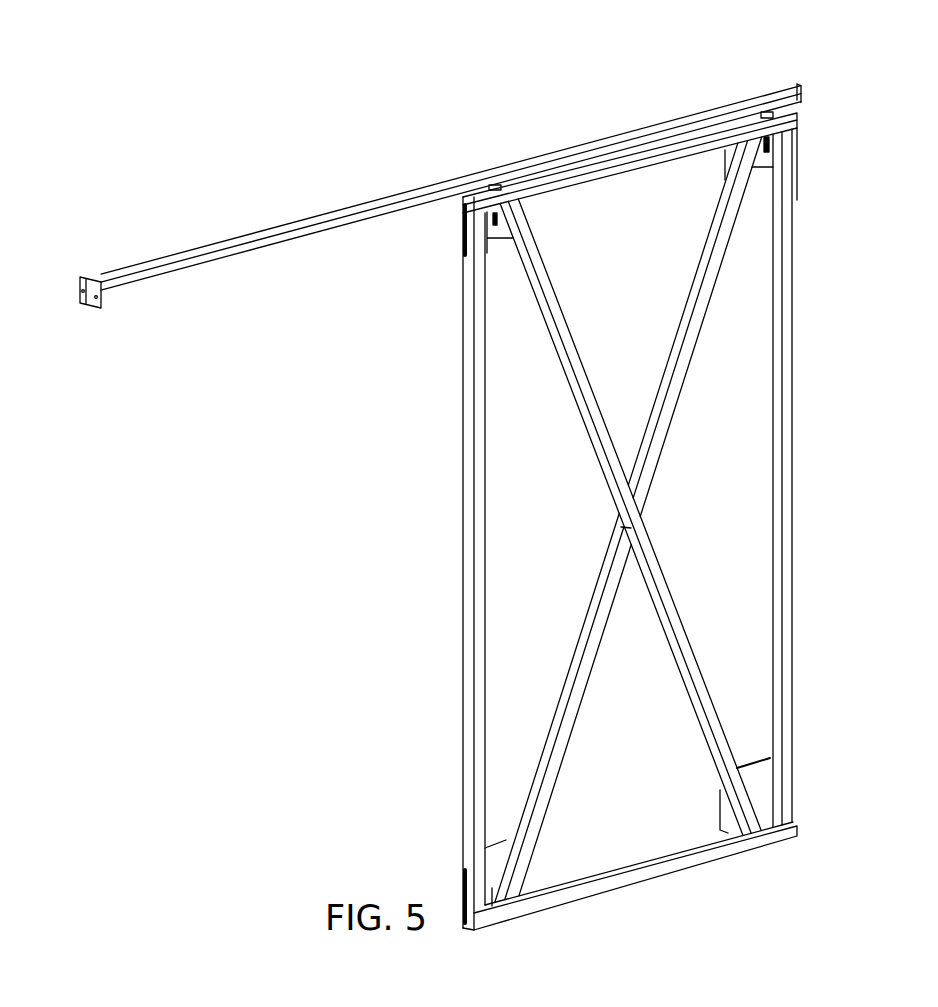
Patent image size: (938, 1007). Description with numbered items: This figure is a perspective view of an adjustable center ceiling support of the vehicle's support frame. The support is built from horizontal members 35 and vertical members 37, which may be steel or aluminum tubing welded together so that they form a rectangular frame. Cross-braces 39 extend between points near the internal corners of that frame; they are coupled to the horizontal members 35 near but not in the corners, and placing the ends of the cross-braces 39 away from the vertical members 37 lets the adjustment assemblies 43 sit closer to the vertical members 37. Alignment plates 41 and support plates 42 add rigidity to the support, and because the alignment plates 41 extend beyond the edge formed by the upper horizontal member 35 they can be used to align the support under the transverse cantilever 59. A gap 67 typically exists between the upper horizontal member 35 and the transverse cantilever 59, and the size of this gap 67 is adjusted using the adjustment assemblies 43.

The horizontal member 35 is at (800, 120).
The vertical member 37 is at (470, 478).
The cross-brace 39 is at (587, 647).
The alignment plate 41 is at (483, 305).
The support plate 42 is at (502, 852).
The adjustment assembly 43 is at (495, 231).
The transverse cantilever 59 is at (217, 250).
The gap 67 is at (804, 108).